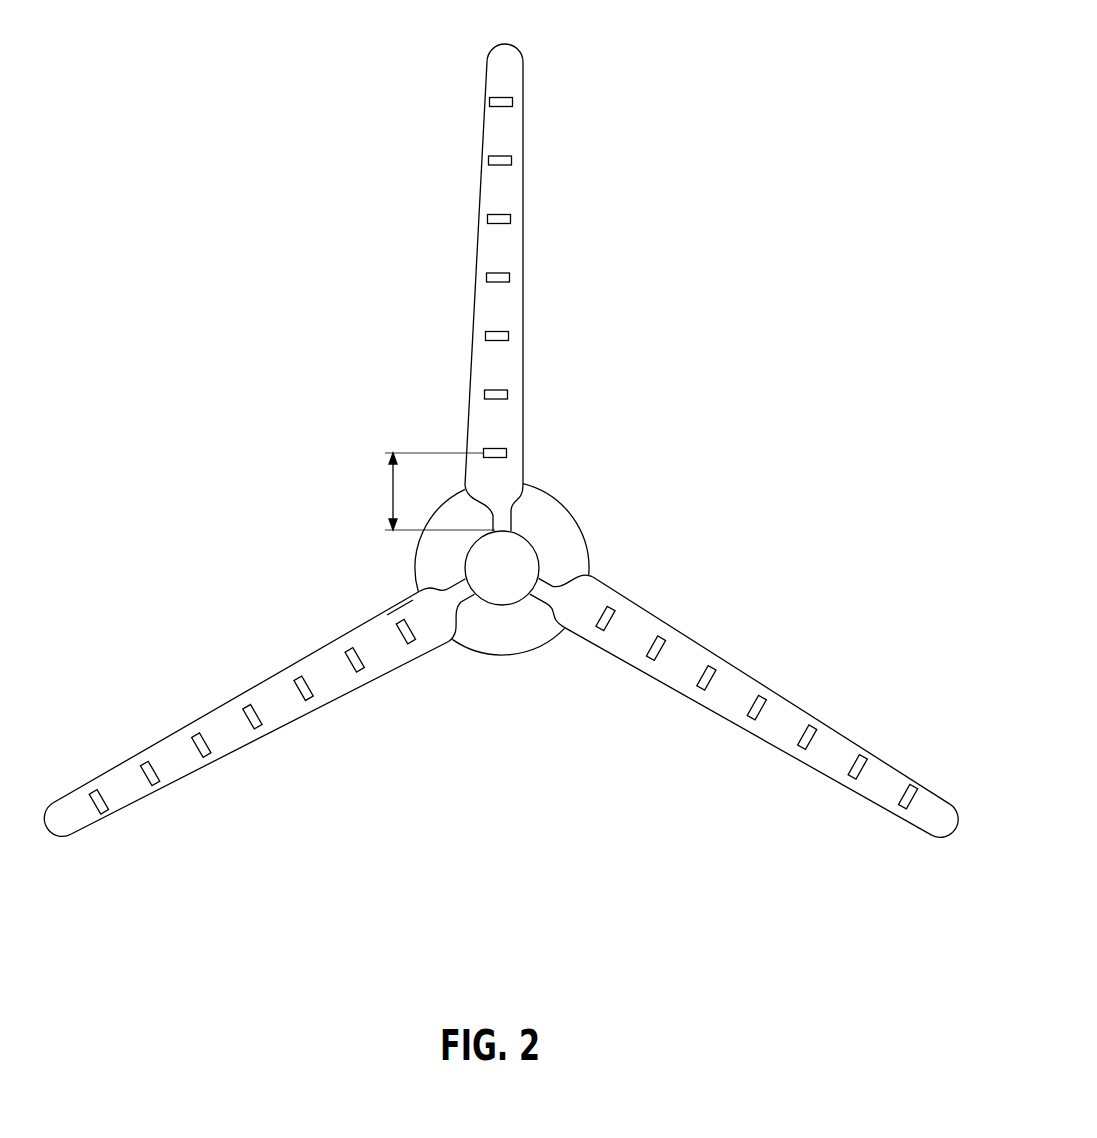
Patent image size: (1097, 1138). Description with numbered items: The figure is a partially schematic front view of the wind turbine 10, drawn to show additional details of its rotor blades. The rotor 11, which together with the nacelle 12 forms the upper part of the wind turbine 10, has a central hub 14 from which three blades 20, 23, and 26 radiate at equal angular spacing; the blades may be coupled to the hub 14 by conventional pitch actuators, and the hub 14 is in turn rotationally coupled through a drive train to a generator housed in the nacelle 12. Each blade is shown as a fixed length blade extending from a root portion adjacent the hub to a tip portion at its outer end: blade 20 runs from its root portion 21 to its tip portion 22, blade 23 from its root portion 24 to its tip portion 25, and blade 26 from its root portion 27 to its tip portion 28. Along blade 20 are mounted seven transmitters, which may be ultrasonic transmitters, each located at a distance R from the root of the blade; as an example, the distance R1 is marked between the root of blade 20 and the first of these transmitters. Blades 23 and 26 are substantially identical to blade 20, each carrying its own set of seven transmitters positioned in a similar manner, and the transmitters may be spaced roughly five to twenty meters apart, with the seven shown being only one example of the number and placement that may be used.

The wind turbine 10 is at (168, 903).
The rotor 11 is at (710, 33).
The nacelle 12 is at (548, 628).
The hub 14 is at (507, 605).
The blade 20 is at (475, 212).
The root portion 21 is at (505, 522).
The tip portion 22 is at (503, 47).
The blade 23 is at (690, 633).
The root portion 24 is at (545, 588).
The tip portion 25 is at (945, 830).
The blade 26 is at (227, 757).
The root portion 27 is at (469, 600).
The tip portion 28 is at (50, 825).
The distance R1 is at (439, 491).